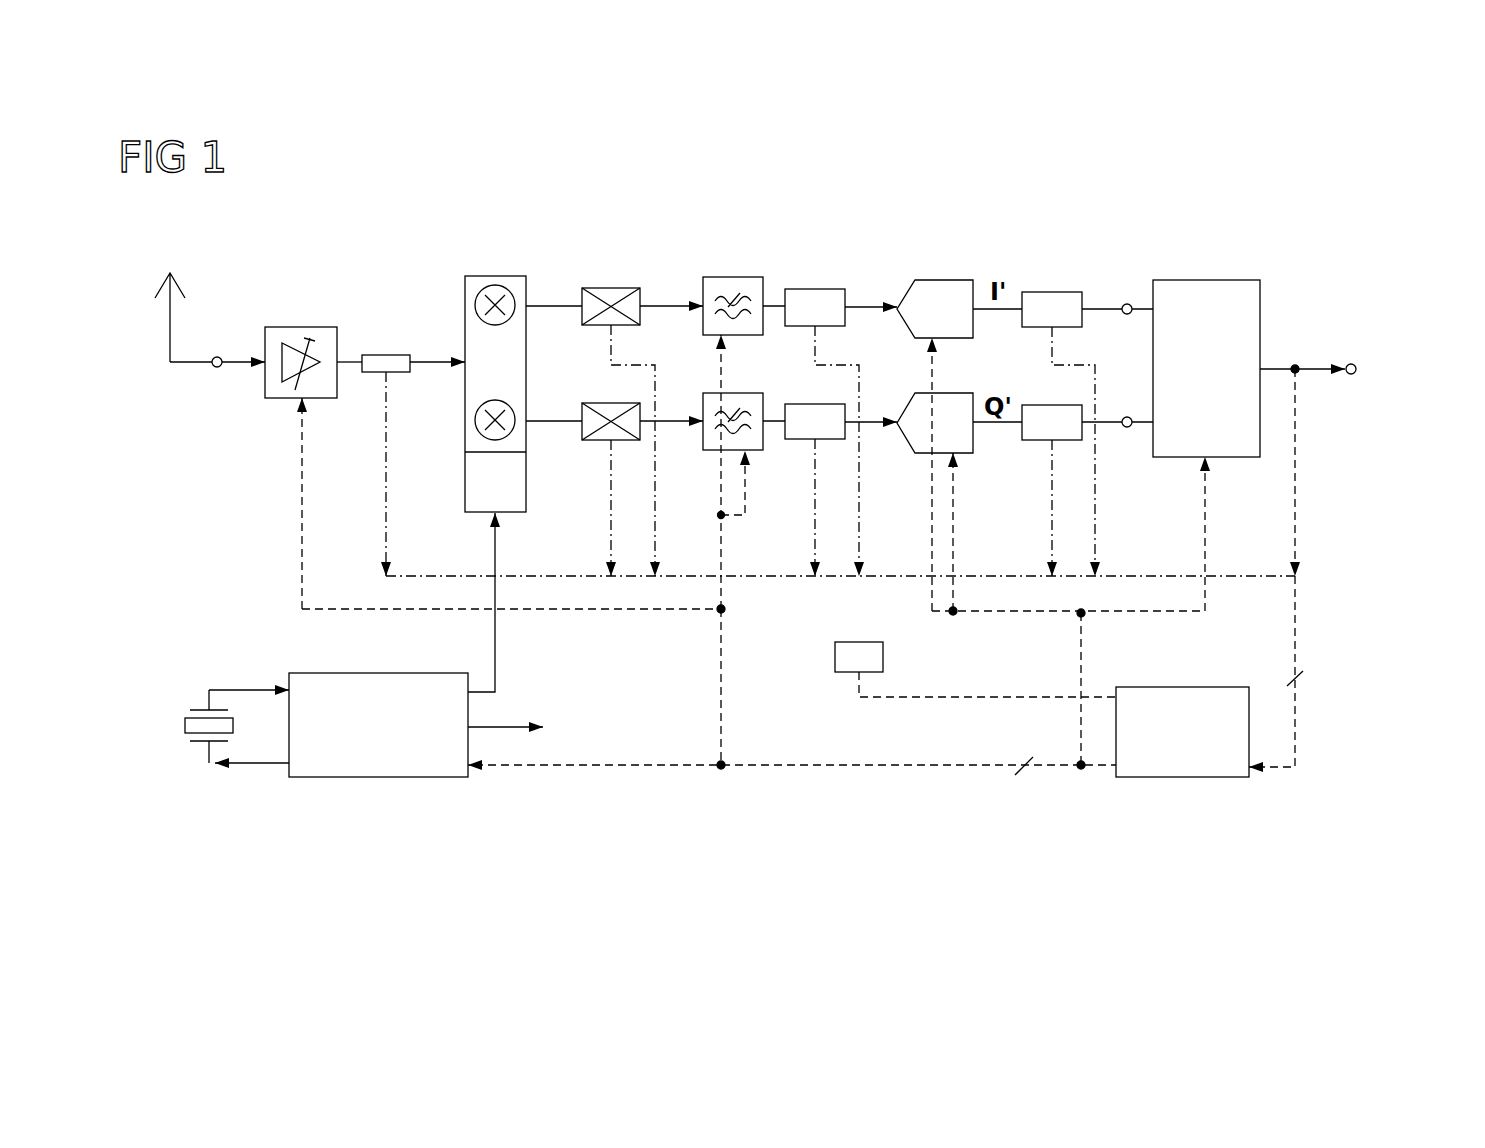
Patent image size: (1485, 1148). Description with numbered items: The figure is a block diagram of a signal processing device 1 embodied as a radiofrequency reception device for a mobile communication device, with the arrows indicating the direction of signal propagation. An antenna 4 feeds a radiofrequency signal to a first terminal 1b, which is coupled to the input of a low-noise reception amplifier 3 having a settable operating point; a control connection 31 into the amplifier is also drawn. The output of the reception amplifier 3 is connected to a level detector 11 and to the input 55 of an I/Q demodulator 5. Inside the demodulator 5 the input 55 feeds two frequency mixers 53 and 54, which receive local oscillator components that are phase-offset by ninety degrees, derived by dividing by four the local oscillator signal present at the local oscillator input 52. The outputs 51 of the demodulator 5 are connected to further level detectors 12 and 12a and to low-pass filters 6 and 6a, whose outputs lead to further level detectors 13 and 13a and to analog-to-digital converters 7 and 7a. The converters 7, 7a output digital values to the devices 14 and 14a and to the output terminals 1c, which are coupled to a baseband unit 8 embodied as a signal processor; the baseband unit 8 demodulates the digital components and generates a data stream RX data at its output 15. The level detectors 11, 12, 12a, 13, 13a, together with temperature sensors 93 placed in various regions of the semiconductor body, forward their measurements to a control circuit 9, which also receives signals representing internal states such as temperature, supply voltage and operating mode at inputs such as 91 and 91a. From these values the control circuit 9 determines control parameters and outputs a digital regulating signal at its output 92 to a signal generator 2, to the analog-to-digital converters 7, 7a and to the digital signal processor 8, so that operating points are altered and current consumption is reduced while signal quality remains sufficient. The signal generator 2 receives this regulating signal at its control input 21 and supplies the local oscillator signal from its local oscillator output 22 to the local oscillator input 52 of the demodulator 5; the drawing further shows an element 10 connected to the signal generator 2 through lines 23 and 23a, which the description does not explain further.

The signal processing device 1 is at (385, 237).
The first terminal 1b is at (217, 356).
The output terminals 1c is at (1127, 314).
The signal generator 2 is at (380, 778).
The reception amplifier 3 is at (301, 327).
The antenna 4 is at (163, 285).
The I/Q demodulator 5 is at (480, 276).
The low-pass filter 6 is at (710, 393).
The low-pass filter 6a is at (730, 277).
The analog-to-digital converter 7 is at (922, 453).
The analog-to-digital converter 7a is at (945, 280).
The baseband unit 8 is at (1205, 280).
The control circuit 9 is at (1182, 778).
The crystal oscillator 10 is at (180, 730).
The level detector 11 is at (385, 355).
The level detector 12 is at (605, 403).
The level detector 12a is at (608, 288).
The level detector 13 is at (808, 404).
The level detector 13a is at (812, 289).
The device 14 is at (1037, 440).
The device 14a is at (1050, 292).
The output 15 is at (1353, 363).
The control input 21 is at (470, 767).
The local oscillator output 22 is at (475, 690).
The reference clock input 23 is at (287, 687).
The reference clock output 23a is at (287, 767).
The gain control input 31 is at (295, 400).
The outputs 51 is at (528, 300).
The local oscillator input 52 is at (487, 513).
The second frequency mixer 53 is at (475, 420).
The first frequency mixer 54 is at (497, 285).
The input 55 is at (462, 360).
The control unit input 91 is at (1255, 770).
The input 91a is at (1113, 693).
The output 92 is at (1114, 772).
The temperature sensors 93 is at (833, 655).